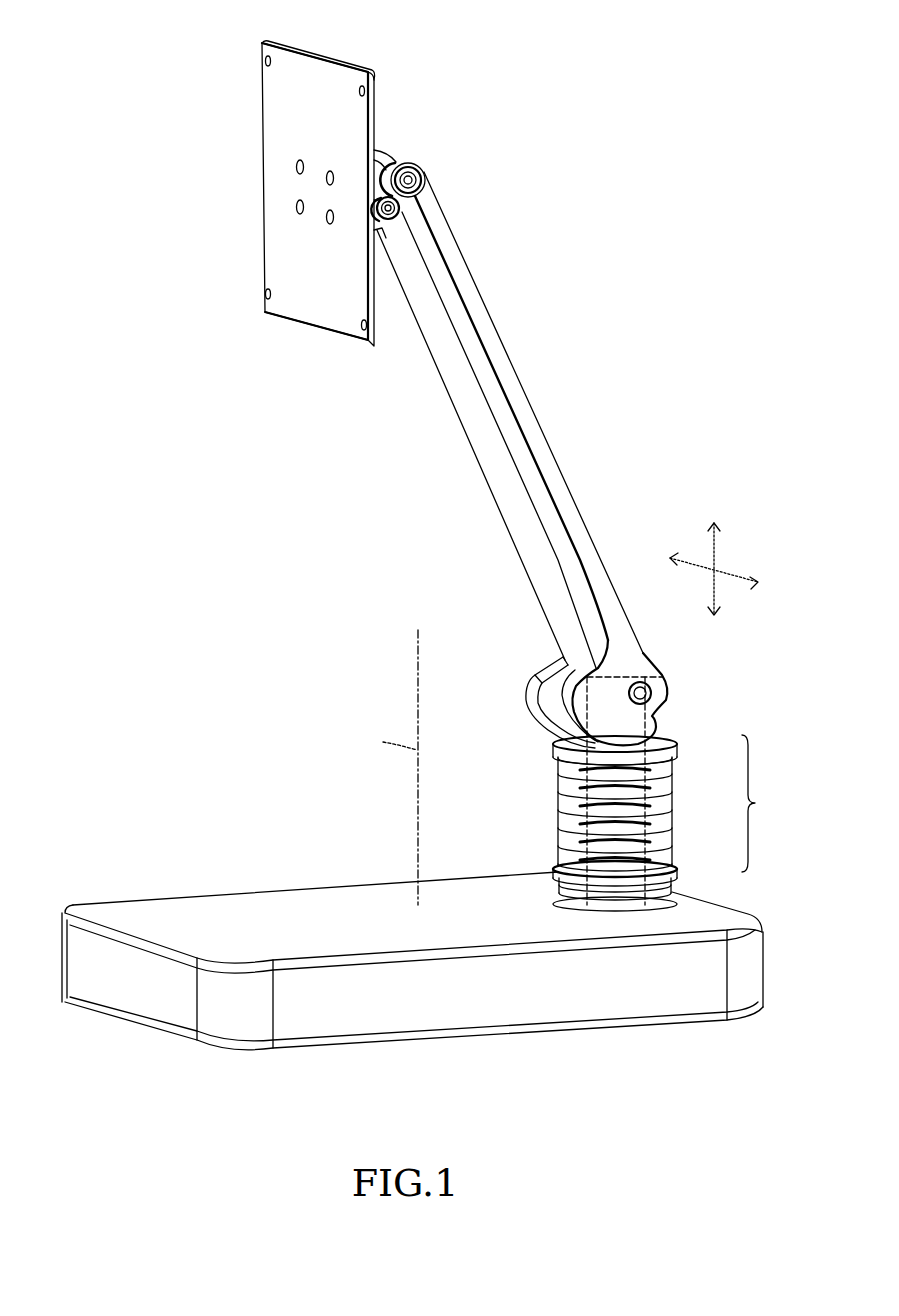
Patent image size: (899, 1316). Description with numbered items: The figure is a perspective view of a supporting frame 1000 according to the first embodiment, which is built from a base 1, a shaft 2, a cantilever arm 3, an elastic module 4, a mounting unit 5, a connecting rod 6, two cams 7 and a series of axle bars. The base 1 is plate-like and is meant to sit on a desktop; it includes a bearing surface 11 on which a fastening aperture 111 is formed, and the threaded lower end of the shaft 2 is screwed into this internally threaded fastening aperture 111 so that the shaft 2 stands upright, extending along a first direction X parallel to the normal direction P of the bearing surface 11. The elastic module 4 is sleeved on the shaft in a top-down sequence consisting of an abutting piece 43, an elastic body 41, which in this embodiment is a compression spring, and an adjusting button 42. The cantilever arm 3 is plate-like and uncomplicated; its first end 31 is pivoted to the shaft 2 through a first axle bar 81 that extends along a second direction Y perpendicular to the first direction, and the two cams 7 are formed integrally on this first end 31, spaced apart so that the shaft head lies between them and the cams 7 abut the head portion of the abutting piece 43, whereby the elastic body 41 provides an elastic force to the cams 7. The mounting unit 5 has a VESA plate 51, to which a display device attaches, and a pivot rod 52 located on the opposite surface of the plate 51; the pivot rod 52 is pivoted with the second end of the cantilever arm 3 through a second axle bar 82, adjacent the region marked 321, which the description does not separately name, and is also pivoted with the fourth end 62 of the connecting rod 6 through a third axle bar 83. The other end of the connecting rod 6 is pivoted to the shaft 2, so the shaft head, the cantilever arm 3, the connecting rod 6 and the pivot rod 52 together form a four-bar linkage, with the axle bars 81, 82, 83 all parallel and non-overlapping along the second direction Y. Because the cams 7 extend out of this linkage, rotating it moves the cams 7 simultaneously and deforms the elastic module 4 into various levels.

The supporting frame 1000 is at (72, 23).
The base 1 is at (412, 923).
The bearing surface 11 is at (382, 910).
The fastening aperture 111 is at (676, 910).
The shaft 2 is at (562, 518).
The cantilever arm 3 is at (462, 278).
The first end 31 is at (664, 680).
The upper pivot end of arm 321 is at (427, 167).
The elastic module 4 is at (661, 814).
The elastic body 41 is at (674, 790).
The adjusting button 42 is at (672, 890).
The abutting piece 43 is at (676, 750).
The mounting unit 5 is at (285, 184).
The plate 51 is at (272, 128).
The pivot rod 52 is at (383, 162).
The connecting rod 6 is at (456, 380).
The fourth end 62 is at (381, 232).
The cams 7 is at (548, 700).
The first axle bar 81 is at (644, 682).
The second axle bar 82 is at (423, 180).
The third axle bar 83 is at (387, 221).